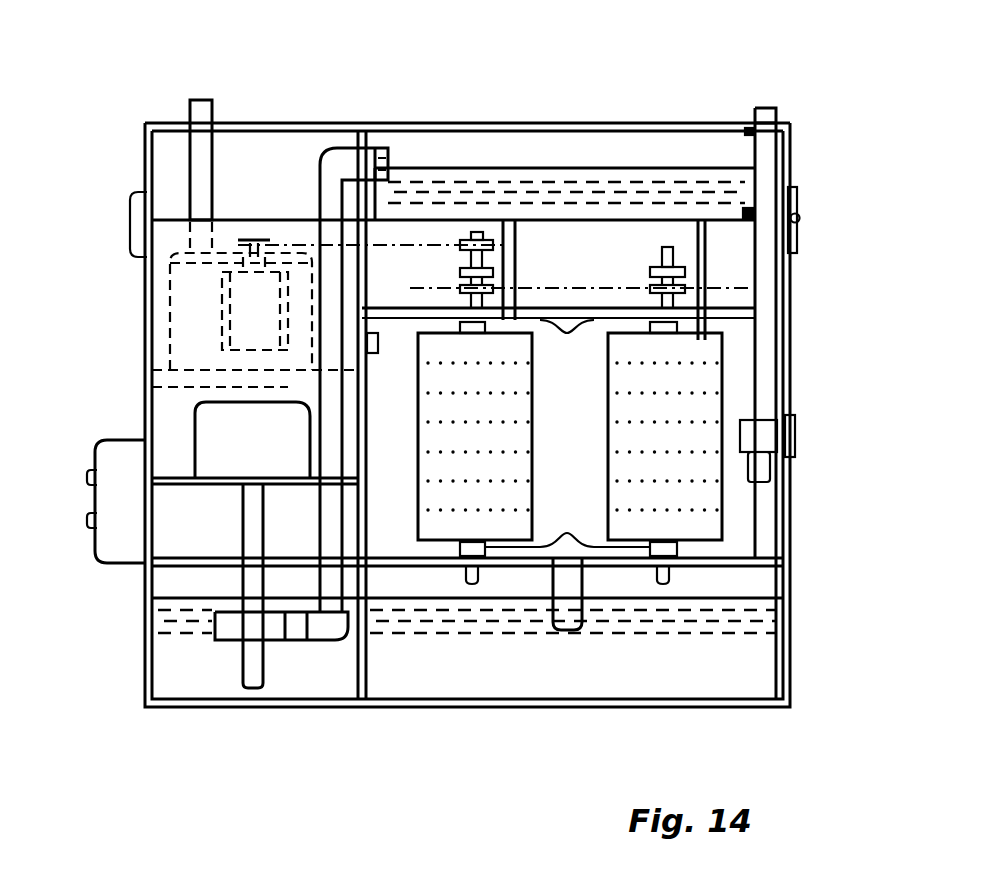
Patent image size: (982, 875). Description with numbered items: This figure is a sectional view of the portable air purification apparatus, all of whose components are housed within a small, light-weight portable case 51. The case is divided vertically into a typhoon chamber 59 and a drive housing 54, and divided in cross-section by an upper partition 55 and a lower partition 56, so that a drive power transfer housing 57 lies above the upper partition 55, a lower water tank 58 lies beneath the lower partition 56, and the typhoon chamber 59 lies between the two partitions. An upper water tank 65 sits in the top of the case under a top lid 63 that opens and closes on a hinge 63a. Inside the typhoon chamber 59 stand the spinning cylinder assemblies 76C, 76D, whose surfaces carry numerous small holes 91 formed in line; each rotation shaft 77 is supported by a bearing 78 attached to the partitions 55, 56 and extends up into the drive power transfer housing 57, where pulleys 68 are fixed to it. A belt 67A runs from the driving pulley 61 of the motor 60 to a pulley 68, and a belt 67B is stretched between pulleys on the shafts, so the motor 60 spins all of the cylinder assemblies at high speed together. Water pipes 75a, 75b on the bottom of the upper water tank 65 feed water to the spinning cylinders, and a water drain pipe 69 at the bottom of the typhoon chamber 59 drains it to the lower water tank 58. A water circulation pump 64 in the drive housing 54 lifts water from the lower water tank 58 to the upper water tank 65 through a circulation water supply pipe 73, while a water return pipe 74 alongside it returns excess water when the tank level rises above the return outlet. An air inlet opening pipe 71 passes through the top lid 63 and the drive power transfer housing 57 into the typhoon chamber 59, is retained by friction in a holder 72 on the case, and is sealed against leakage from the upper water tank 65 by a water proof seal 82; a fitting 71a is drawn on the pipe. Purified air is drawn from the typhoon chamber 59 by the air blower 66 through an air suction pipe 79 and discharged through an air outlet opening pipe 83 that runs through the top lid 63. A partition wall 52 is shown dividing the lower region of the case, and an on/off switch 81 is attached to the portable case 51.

The portable case 51 is at (786, 362).
The partition wall 52 is at (361, 463).
The drive housing 54 is at (237, 233).
The upper partition 55 is at (415, 318).
The lower partition 56 is at (522, 559).
The drive power transfer housing 57 is at (583, 243).
The lower water tank 58 is at (527, 665).
The typhoon chamber 59 is at (550, 427).
The motor 60 is at (245, 297).
The driving pulley 61 is at (258, 235).
The top lid 63 is at (512, 125).
The hinge 63a is at (799, 217).
The water circulation pump 64 is at (207, 428).
The upper water tank 65 is at (523, 147).
The air blower 66 is at (200, 262).
The belt 67A is at (425, 245).
The belt 67B is at (593, 287).
The pulley 68 is at (459, 246).
The water drain pipe 69 is at (569, 631).
The air inlet opening pipe 71 is at (768, 290).
The pipe fitting 71a is at (758, 465).
The holder 72 is at (760, 435).
The circulation water supply pipe 73 is at (340, 147).
The water return pipe 74 is at (326, 197).
The water pipe 75a is at (511, 277).
The water pipe 75b is at (701, 278).
The spinning cylinder assembly 76C is at (418, 462).
The spinning cylinder assembly 76D is at (723, 408).
The rotation shaft 77 is at (494, 253).
The bearing 78 is at (567, 433).
The air suction pipe 79 is at (371, 353).
The on/off switch 81 is at (94, 502).
The water proof seal 82 is at (750, 213).
The air outlet opening pipe 83 is at (203, 182).
The small holes 91 is at (630, 453).